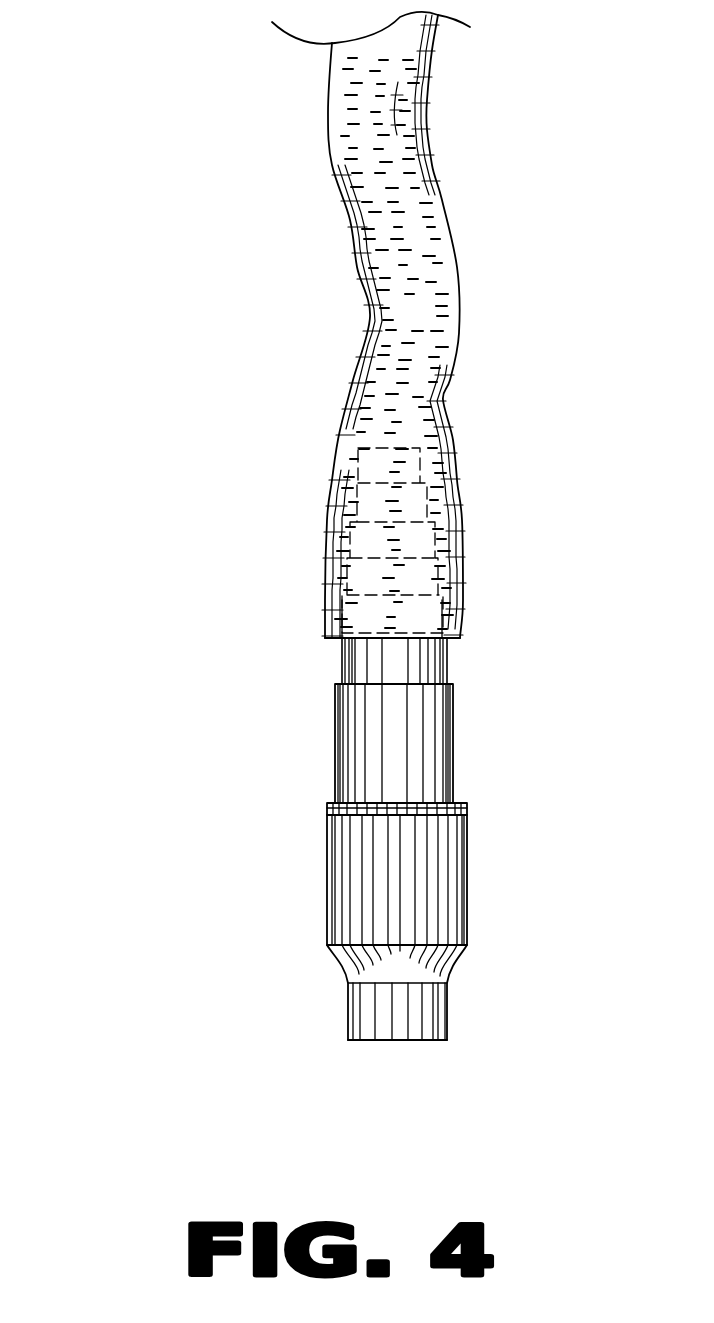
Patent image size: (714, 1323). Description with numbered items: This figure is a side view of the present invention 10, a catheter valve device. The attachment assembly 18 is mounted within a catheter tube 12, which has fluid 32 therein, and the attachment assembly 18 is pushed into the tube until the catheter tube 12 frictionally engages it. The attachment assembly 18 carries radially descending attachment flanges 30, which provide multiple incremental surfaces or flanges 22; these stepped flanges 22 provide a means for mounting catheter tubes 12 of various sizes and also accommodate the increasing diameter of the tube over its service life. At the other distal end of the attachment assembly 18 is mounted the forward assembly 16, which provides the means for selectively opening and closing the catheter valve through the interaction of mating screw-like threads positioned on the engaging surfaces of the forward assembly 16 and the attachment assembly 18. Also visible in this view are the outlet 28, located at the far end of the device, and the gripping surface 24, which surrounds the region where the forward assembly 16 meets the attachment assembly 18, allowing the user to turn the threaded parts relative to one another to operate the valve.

The present invention 10 is at (208, 362).
The catheter tube 12 is at (367, 183).
The forward assembly 16 is at (383, 963).
The attachment assembly 18 is at (335, 740).
The flanges 22 is at (412, 582).
The gripping surface 24 is at (428, 840).
The outlet 28 is at (418, 1040).
The radially descending attachment flanges 30 is at (368, 557).
The fluid 32 is at (428, 272).